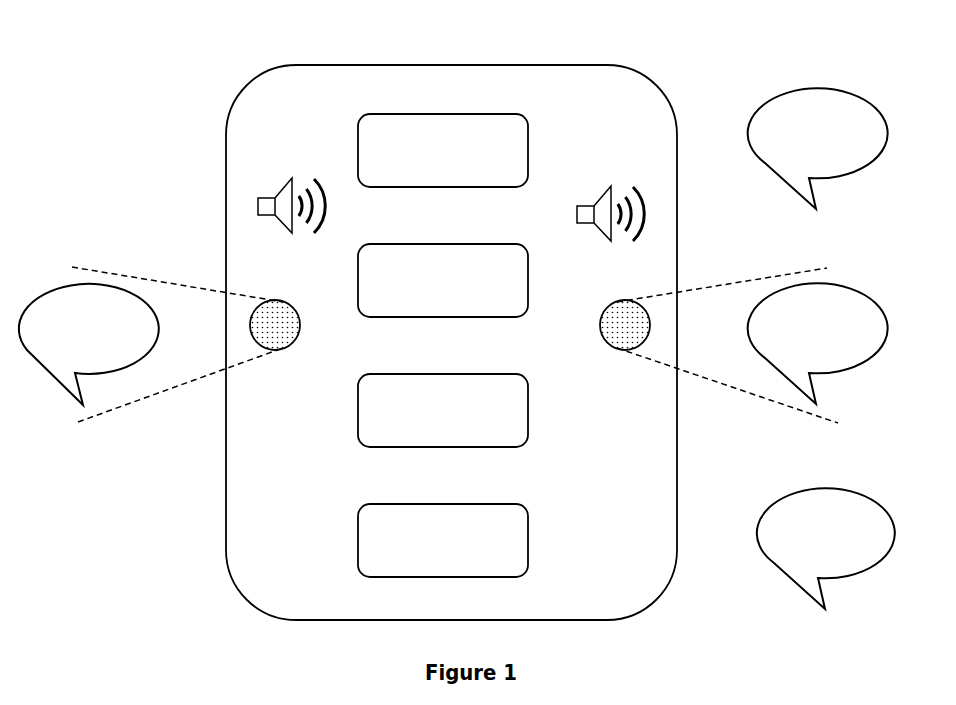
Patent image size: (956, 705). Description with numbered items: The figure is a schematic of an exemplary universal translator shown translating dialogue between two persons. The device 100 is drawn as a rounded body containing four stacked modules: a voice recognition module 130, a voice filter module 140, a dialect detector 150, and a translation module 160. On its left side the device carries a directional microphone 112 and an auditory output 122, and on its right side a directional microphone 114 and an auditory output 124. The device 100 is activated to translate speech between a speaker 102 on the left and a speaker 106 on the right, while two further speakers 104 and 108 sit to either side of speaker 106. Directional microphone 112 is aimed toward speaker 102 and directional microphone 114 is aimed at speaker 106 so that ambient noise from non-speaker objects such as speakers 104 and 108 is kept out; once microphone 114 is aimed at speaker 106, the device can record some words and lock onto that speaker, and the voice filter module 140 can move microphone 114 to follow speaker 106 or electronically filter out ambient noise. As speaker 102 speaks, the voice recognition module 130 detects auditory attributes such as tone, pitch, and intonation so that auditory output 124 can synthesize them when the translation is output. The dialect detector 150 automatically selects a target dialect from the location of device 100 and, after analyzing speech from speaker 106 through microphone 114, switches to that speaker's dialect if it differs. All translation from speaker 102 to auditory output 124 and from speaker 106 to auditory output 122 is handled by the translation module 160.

The device 100 is at (186, 54).
The speaker 102 is at (89, 344).
The speaker 104 is at (818, 148).
The speaker 106 is at (818, 343).
The speaker 108 is at (826, 548).
The directional microphone 112 is at (186, 344).
The directional microphone 114 is at (719, 345).
The auditory output 122 is at (291, 220).
The auditory output 124 is at (610, 232).
The voice recognition module 130 is at (443, 150).
The voice filter module 140 is at (443, 280).
The dialect detector 150 is at (443, 410).
The translation module 160 is at (443, 540).